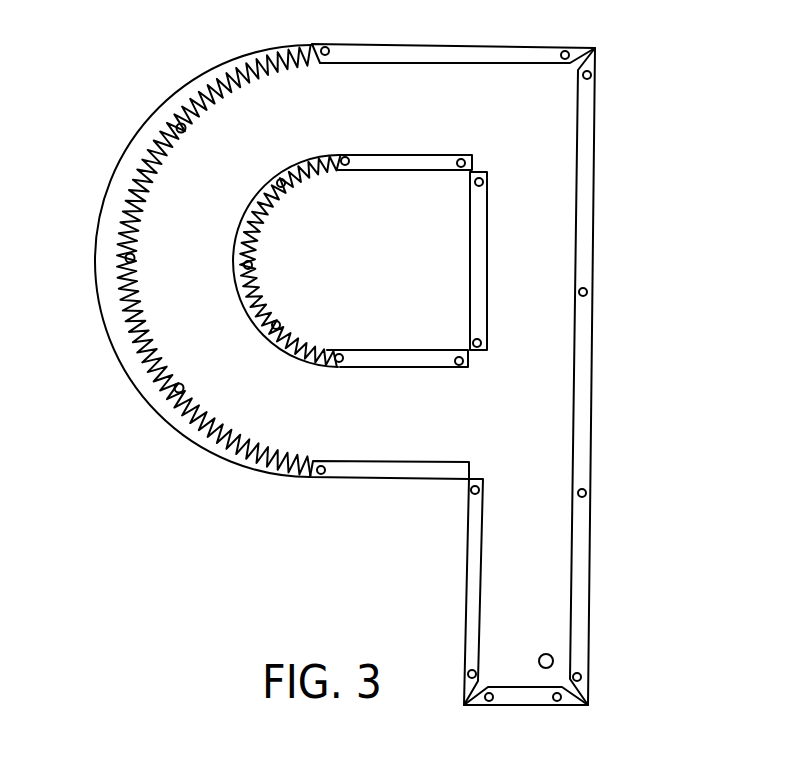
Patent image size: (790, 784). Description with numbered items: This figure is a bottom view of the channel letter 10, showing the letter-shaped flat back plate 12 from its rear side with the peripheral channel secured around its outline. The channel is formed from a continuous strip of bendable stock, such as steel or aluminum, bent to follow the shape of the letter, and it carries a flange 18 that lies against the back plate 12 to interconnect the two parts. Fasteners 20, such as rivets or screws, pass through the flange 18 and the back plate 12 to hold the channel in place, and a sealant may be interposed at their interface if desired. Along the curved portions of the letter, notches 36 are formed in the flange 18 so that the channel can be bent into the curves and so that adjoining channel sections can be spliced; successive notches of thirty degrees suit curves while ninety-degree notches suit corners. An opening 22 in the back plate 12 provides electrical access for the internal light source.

The channel letter 10 is at (625, 149).
The back plate 12 is at (545, 134).
The flange 18 is at (482, 227).
The fasteners 20 is at (480, 350).
The opening 22 is at (546, 653).
The notches 36 is at (288, 176).